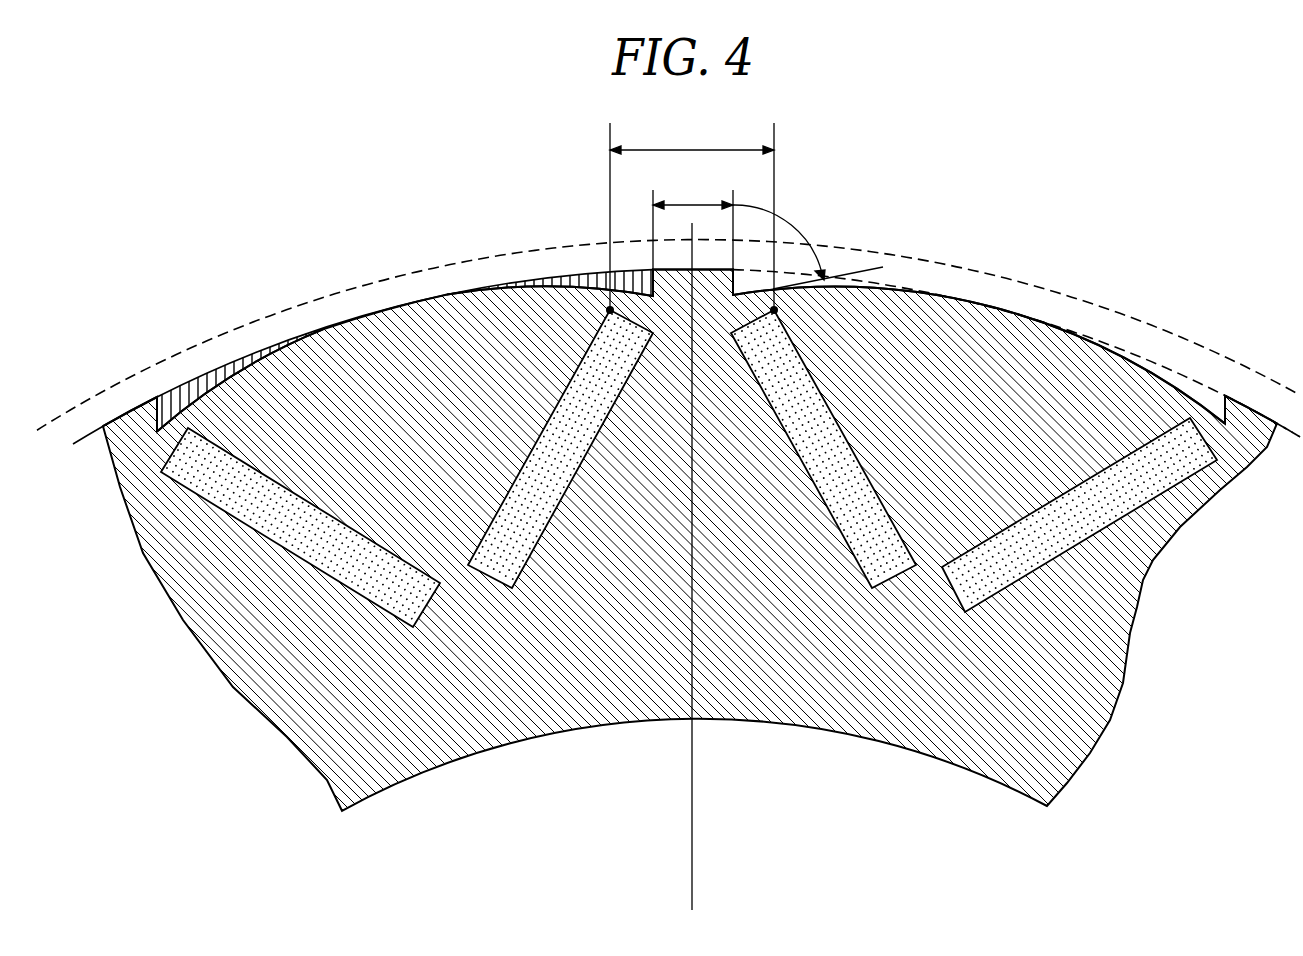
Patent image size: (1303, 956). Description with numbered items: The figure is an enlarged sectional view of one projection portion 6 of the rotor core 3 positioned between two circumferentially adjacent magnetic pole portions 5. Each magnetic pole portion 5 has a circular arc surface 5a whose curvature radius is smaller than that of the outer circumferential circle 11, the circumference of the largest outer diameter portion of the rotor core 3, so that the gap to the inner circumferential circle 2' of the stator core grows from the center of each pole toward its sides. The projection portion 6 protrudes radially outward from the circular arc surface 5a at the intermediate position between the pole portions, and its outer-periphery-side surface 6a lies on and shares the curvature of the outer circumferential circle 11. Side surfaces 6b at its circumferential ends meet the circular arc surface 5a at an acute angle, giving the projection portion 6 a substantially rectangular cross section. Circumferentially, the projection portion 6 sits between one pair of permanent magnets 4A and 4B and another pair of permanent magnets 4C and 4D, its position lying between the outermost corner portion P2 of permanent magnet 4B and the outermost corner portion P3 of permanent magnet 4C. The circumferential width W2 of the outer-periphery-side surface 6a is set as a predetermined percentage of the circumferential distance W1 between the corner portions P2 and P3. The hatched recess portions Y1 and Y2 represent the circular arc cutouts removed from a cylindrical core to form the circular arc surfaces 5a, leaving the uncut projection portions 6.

The inner circumferential circle of the stator core 2' is at (668, 389).
The rotor core 3 is at (510, 745).
The permanent magnet 4A is at (345, 555).
The permanent magnet 4B is at (535, 525).
The permanent magnet 4C is at (853, 523).
The permanent magnet 4D is at (1097, 518).
The magnetic pole portion 5 is at (377, 367).
The circular arc surface 5a is at (530, 283).
The projection portion 6 is at (637, 273).
The outer-periphery-side surface 6a is at (114, 412).
The side surface 6b is at (150, 410).
The outer circumferential circle 11 is at (1293, 430).
The corner portion P2 is at (573, 278).
The corner portion P3 is at (774, 310).
The width between hole end points W1 is at (692, 215).
The circumferential width W2 is at (693, 236).
The recess portion Y1 is at (177, 397).
The recess portion Y2 is at (602, 277).